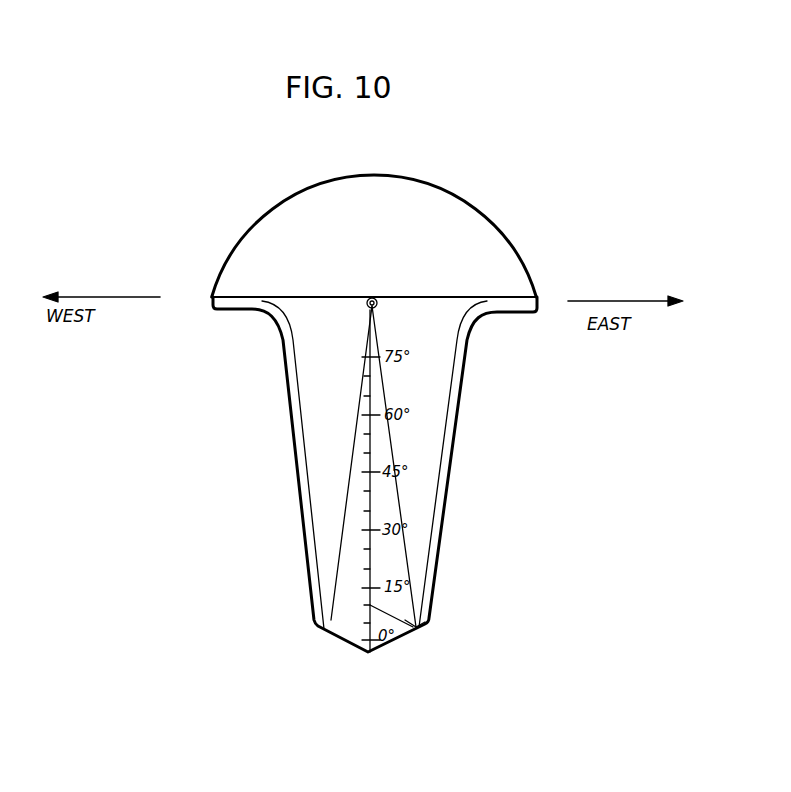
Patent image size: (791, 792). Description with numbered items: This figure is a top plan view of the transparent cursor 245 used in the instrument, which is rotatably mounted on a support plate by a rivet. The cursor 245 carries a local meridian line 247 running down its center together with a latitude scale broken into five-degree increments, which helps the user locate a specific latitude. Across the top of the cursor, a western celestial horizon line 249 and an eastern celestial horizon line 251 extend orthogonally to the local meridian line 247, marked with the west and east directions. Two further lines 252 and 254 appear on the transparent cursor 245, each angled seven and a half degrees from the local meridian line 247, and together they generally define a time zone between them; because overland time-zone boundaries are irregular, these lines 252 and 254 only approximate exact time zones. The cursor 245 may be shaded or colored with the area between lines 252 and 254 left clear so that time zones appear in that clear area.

The transparent cursor 245 is at (472, 198).
The local meridian line 247 is at (413, 628).
The western celestial horizon line 249 is at (217, 297).
The eastern celestial horizon line 251 is at (497, 300).
The time zone line 252 is at (330, 607).
The time zone line 254 is at (405, 562).